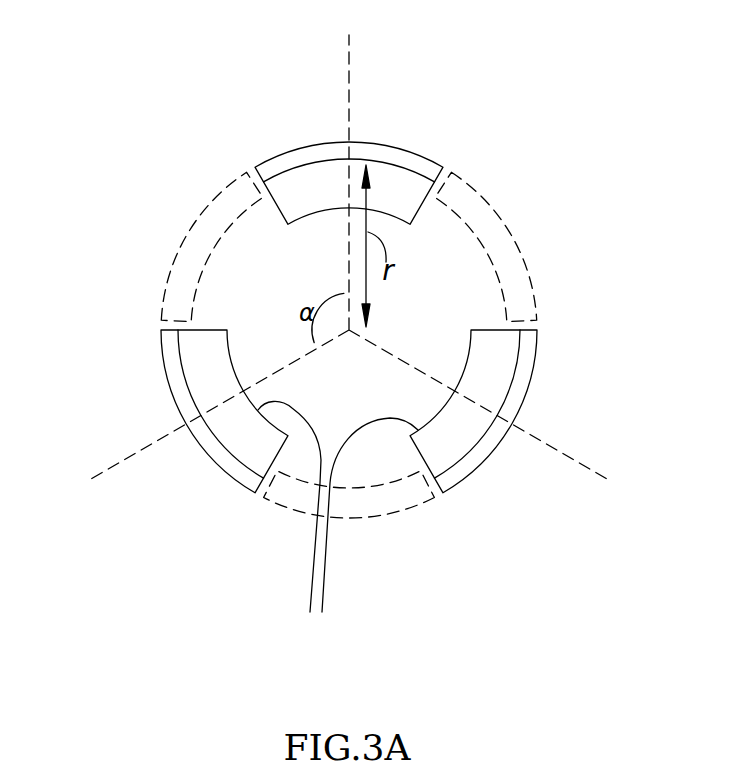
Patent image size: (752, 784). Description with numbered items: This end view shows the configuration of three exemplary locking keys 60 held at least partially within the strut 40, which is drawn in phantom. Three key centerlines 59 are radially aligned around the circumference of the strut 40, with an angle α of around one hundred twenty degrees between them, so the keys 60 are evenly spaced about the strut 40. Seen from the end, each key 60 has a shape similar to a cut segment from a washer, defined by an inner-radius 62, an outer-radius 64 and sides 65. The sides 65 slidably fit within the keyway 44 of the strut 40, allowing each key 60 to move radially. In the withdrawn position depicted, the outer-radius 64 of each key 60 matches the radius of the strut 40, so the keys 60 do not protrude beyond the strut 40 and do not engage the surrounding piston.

The strut 40 is at (213, 200).
The keyway 44 is at (250, 167).
The key centerline 59 is at (352, 70).
The locking key 60 is at (383, 185).
The inner-radius 62 is at (80, 243).
The outer-radius 64 is at (425, 160).
The side 65 is at (270, 468).